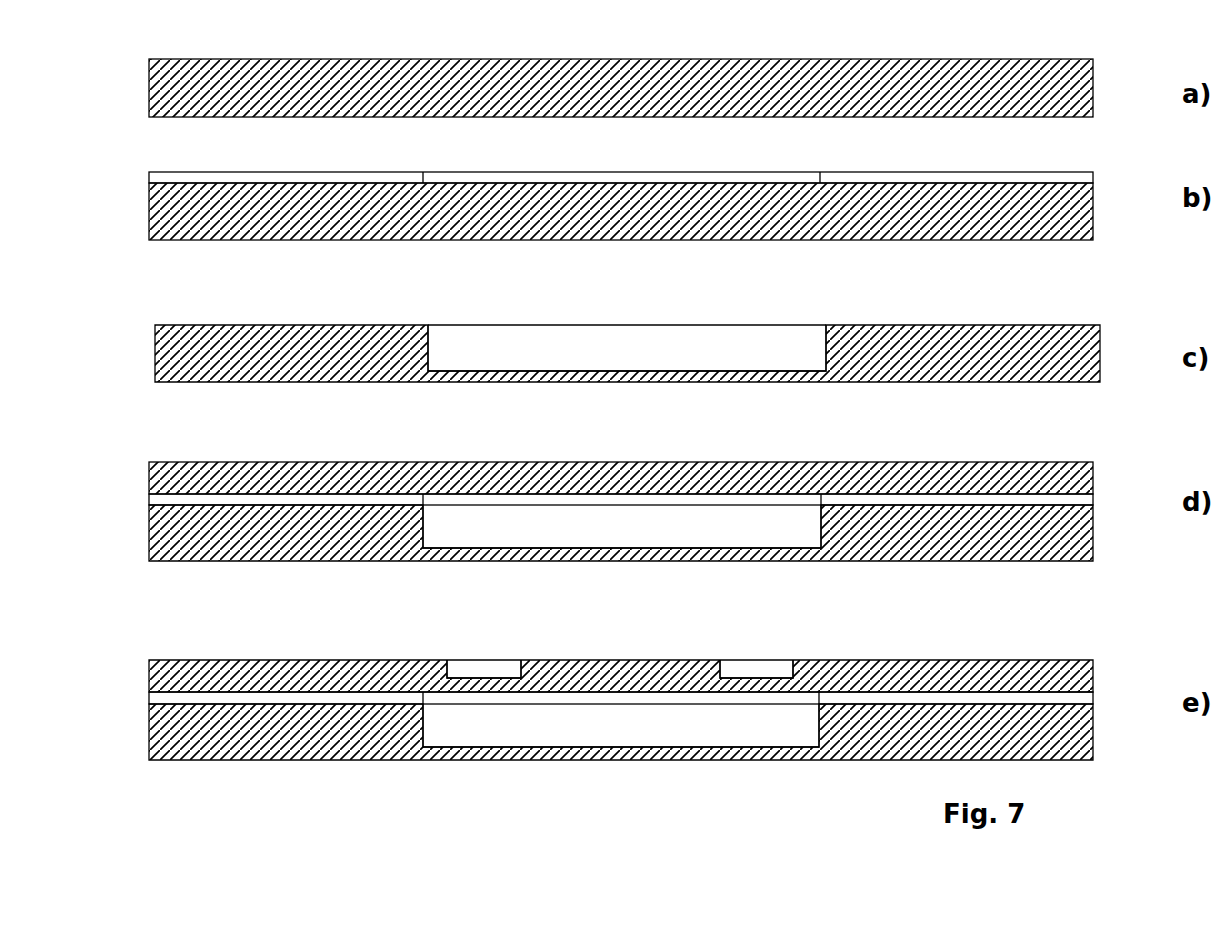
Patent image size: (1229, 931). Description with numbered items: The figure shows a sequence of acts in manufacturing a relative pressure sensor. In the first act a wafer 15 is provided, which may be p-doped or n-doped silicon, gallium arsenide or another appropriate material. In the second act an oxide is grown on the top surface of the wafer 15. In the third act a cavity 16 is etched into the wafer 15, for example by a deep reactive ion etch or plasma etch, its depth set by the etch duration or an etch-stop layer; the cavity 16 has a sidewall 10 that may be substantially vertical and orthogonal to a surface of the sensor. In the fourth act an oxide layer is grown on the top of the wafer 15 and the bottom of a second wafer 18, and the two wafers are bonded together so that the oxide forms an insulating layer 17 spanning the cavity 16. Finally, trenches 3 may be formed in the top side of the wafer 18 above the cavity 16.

The wafer 15 is at (624, 409).
The insulating layer 17 is at (952, 178).
The wafer 18 is at (1067, 481).
The cavity 16 is at (624, 536).
The sidewall 10 is at (826, 358).
The trenches 3 is at (497, 675).